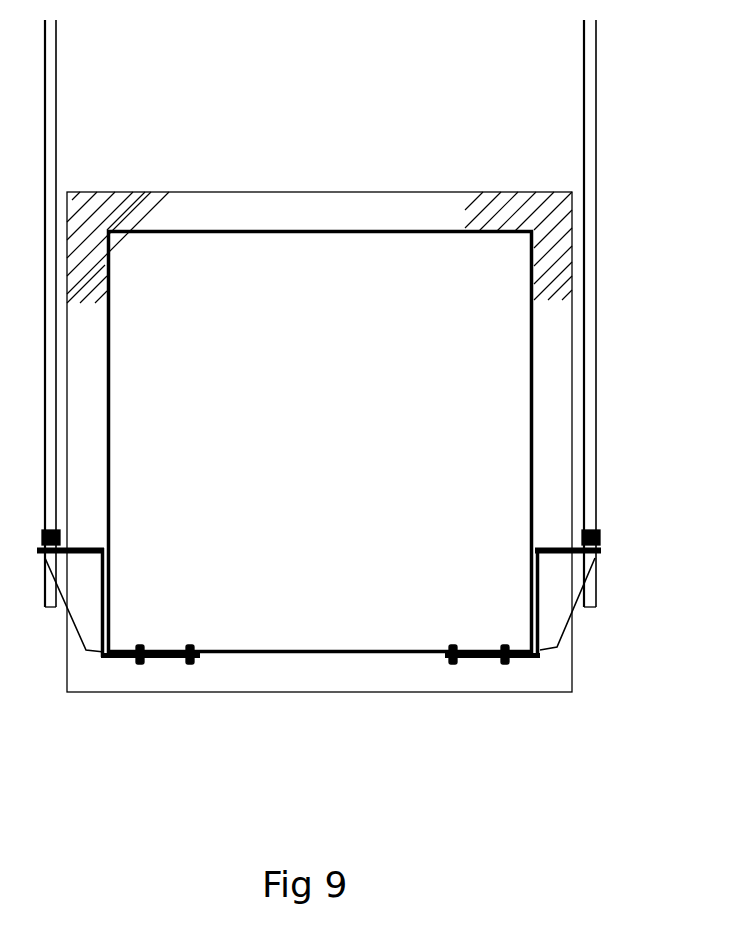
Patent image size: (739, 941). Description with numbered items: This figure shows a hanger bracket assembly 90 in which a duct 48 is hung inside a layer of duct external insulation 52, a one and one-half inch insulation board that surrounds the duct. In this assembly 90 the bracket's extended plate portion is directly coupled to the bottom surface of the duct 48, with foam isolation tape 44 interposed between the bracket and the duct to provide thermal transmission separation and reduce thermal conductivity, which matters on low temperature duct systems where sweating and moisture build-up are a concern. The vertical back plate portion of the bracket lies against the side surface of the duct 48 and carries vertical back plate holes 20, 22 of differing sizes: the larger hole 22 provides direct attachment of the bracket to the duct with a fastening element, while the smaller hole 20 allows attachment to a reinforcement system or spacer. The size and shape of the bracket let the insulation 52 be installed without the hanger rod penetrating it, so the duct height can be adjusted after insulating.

The hanger bracket assembly 90 is at (336, 356).
The duct external insulation 52 is at (165, 192).
The duct 48 is at (110, 440).
The foam isolation tape 44 is at (112, 590).
The vertical back plate hole 22 is at (543, 588).
The vertical back plate hole 20 is at (540, 620).